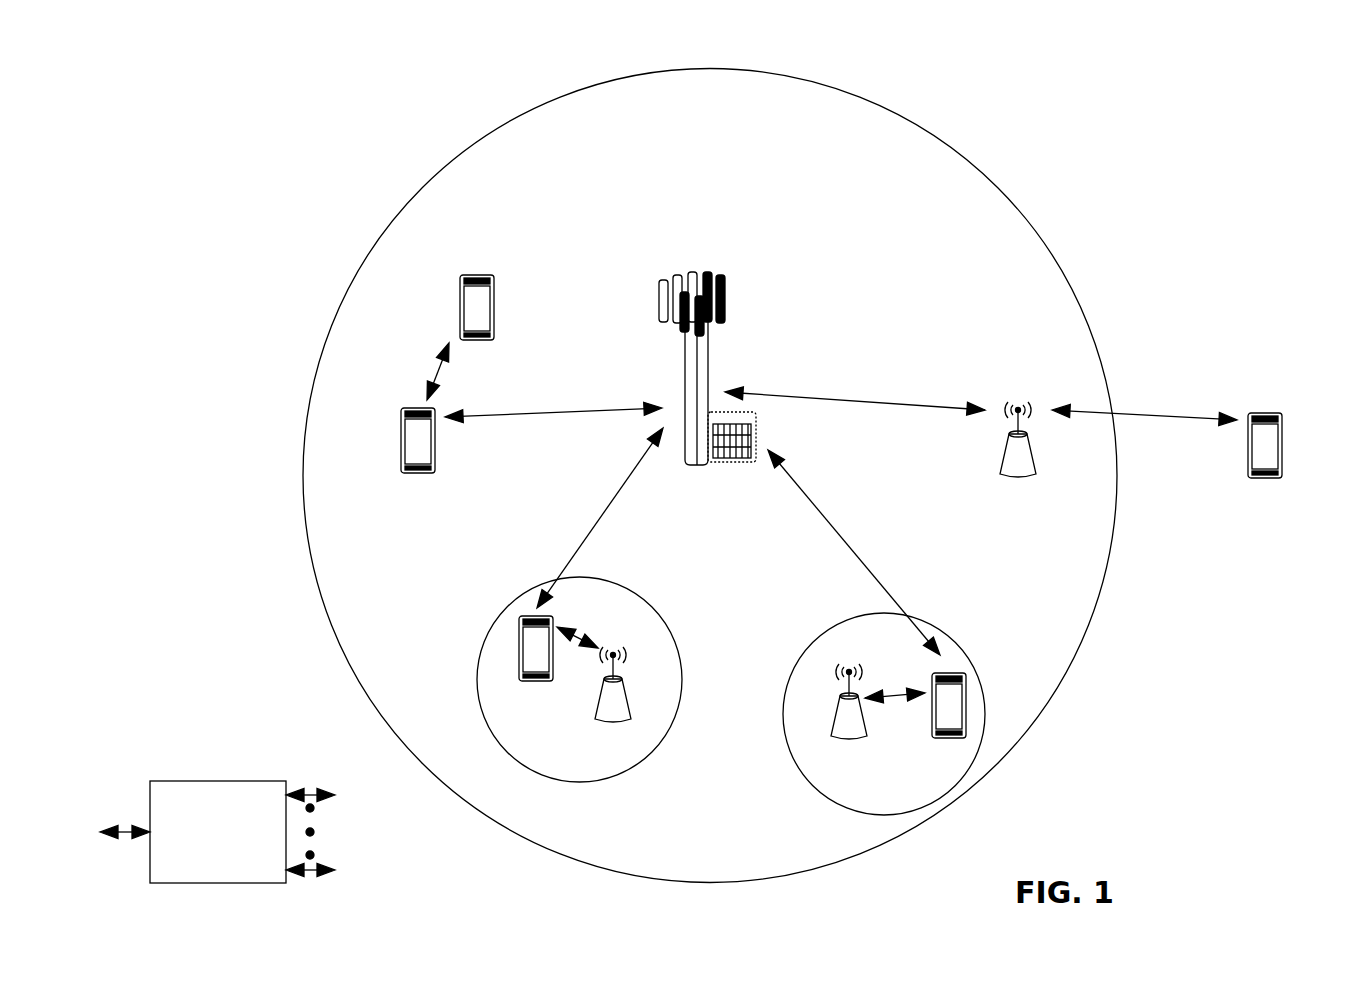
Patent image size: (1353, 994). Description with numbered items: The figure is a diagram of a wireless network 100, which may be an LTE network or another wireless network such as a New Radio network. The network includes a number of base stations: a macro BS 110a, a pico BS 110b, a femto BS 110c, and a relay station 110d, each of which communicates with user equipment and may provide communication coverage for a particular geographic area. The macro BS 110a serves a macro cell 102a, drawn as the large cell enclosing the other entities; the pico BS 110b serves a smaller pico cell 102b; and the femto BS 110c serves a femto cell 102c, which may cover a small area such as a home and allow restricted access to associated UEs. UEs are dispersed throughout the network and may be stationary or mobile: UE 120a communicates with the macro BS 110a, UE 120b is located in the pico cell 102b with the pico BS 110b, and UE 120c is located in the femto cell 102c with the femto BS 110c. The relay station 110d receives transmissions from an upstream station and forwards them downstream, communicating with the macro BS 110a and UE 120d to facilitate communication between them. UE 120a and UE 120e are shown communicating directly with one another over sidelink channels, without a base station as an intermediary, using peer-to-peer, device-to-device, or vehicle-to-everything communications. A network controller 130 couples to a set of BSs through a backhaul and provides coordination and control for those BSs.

The wireless network 100 is at (206, 69).
The macro cell 102a is at (985, 173).
The pico cell 102b is at (671, 620).
The femto cell 102c is at (824, 632).
The macro BS 110a is at (700, 266).
The pico BS 110b is at (628, 705).
The femto BS 110c is at (832, 722).
The relay station 110d is at (1019, 400).
The UE 120a is at (400, 442).
The UE 120b is at (523, 681).
The UE 120c is at (935, 741).
The UE 120d is at (1272, 409).
The UE 120e is at (460, 296).
The network controller 130 is at (215, 780).